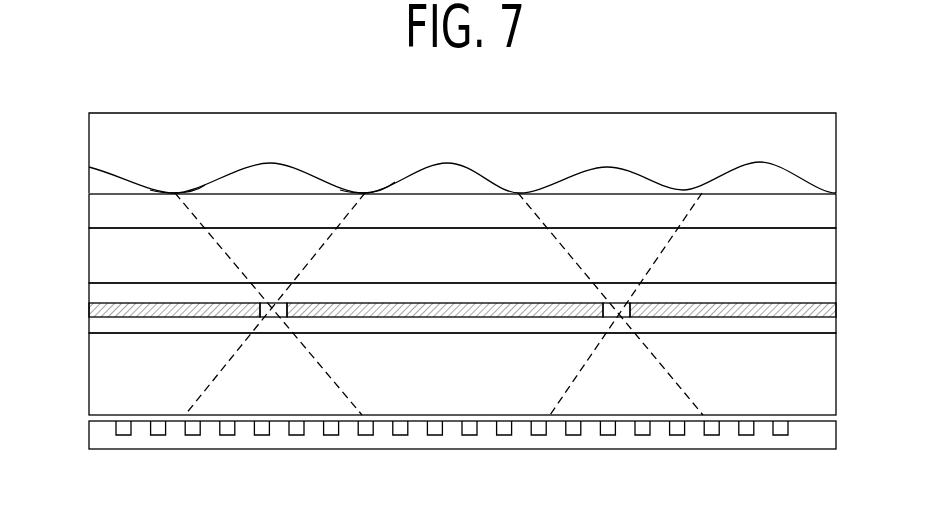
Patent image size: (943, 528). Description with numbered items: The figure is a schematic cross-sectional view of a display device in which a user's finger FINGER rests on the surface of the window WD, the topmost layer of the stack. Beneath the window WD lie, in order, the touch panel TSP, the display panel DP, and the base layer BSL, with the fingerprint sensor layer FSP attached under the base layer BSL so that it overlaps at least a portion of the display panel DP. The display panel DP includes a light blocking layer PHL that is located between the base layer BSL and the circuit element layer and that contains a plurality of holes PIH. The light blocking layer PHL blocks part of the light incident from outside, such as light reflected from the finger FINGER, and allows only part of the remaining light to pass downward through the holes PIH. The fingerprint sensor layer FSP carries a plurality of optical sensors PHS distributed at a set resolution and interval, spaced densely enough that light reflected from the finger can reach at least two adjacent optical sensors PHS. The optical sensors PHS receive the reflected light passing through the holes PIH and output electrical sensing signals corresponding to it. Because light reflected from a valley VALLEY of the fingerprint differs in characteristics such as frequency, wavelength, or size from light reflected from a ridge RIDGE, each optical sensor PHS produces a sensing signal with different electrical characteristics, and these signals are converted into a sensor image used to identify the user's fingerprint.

The window WD is at (837, 210).
The touch panel TSP is at (837, 248).
The display panel DP is at (449, 334).
The base layer BSL is at (837, 372).
The fingerprint sensor layer FSP is at (837, 433).
The optical sensors PHS is at (780, 435).
The light blocking layer PHL is at (98, 313).
The holes PIH is at (260, 310).
The finger FINGER is at (798, 152).
The valley VALLEY is at (229, 163).
The ridge RIDGE is at (362, 175).